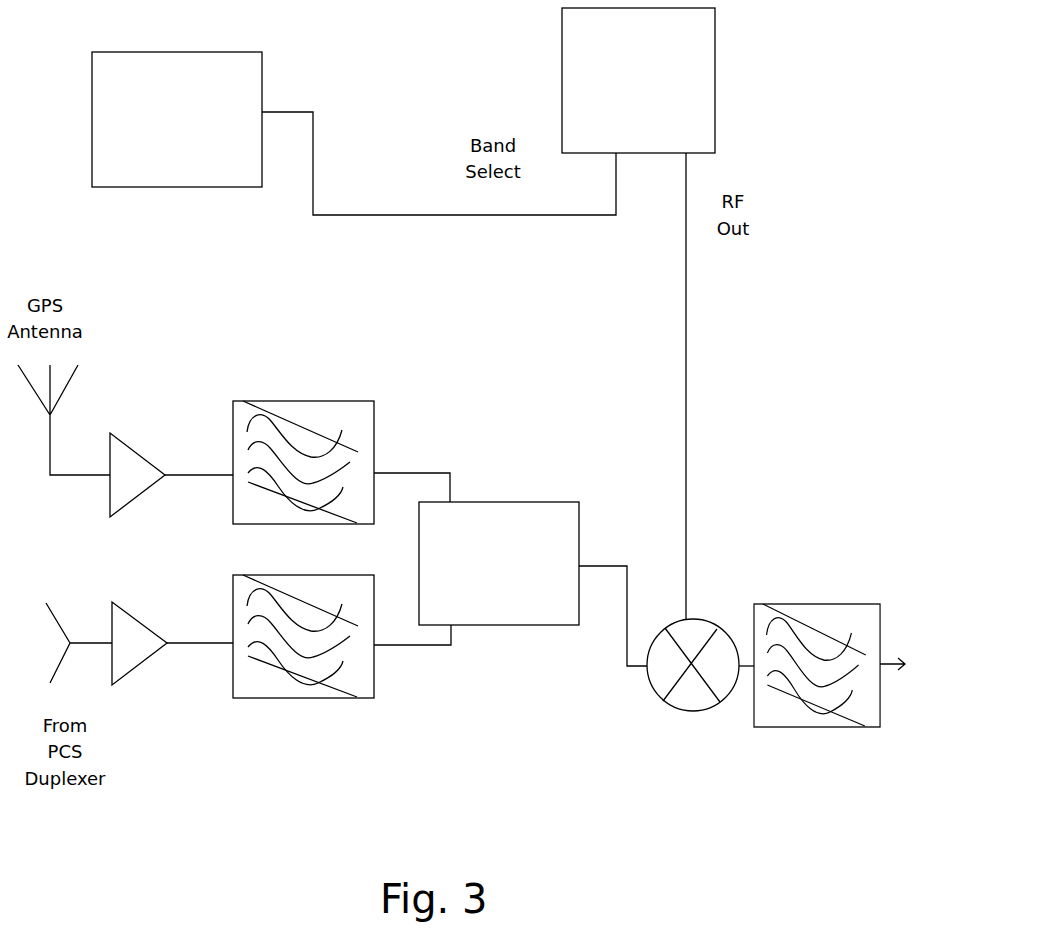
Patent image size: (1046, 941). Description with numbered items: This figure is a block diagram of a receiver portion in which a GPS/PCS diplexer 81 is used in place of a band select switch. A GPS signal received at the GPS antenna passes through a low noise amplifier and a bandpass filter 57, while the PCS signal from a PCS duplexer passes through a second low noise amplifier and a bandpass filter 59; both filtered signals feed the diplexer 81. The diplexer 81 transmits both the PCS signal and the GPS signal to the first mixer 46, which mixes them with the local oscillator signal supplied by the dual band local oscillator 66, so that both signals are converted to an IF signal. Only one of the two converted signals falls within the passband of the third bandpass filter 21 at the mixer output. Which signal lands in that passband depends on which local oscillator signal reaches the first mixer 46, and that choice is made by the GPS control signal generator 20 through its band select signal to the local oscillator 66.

The GPS control signal generator 20 is at (225, 52).
The dual band local oscillator 66 is at (715, 90).
The GPS bandpass filter 57 is at (340, 401).
The PCS bandpass filter 59 is at (295, 697).
The diplexer 81 is at (550, 502).
The first mixer 46 is at (693, 711).
The third bandpass filter 21 is at (797, 604).